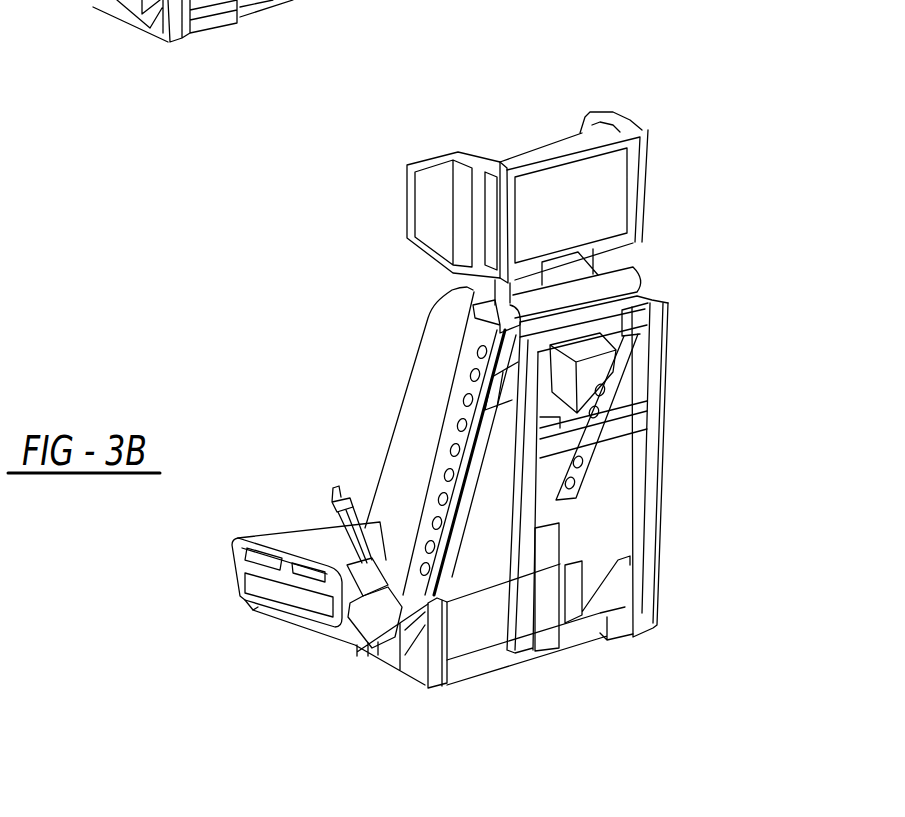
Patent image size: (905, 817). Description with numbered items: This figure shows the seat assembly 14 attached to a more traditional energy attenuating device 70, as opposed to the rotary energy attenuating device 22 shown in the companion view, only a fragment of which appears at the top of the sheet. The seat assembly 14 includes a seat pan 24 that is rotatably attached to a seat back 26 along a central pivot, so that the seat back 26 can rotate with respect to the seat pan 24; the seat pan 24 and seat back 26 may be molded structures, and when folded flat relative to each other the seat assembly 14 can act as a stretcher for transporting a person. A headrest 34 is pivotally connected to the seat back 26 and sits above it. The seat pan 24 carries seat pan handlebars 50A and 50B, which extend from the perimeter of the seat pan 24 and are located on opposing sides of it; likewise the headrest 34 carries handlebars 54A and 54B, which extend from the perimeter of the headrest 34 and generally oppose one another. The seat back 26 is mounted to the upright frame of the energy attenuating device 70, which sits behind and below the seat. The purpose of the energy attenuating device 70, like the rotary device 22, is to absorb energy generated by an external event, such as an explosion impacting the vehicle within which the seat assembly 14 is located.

The seat assembly 14 is at (425, 378).
The energy attenuating device 22 is at (312, 0).
The seat pan 24 is at (335, 547).
The seat back 26 is at (407, 450).
The headrest 34 is at (525, 153).
The seat pan handlebar 50A is at (380, 497).
The seat pan handlebar 50B is at (232, 560).
The headrest handlebar 54A is at (600, 112).
The headrest handlebar 54B is at (408, 209).
The energy attenuating device 70 is at (668, 428).